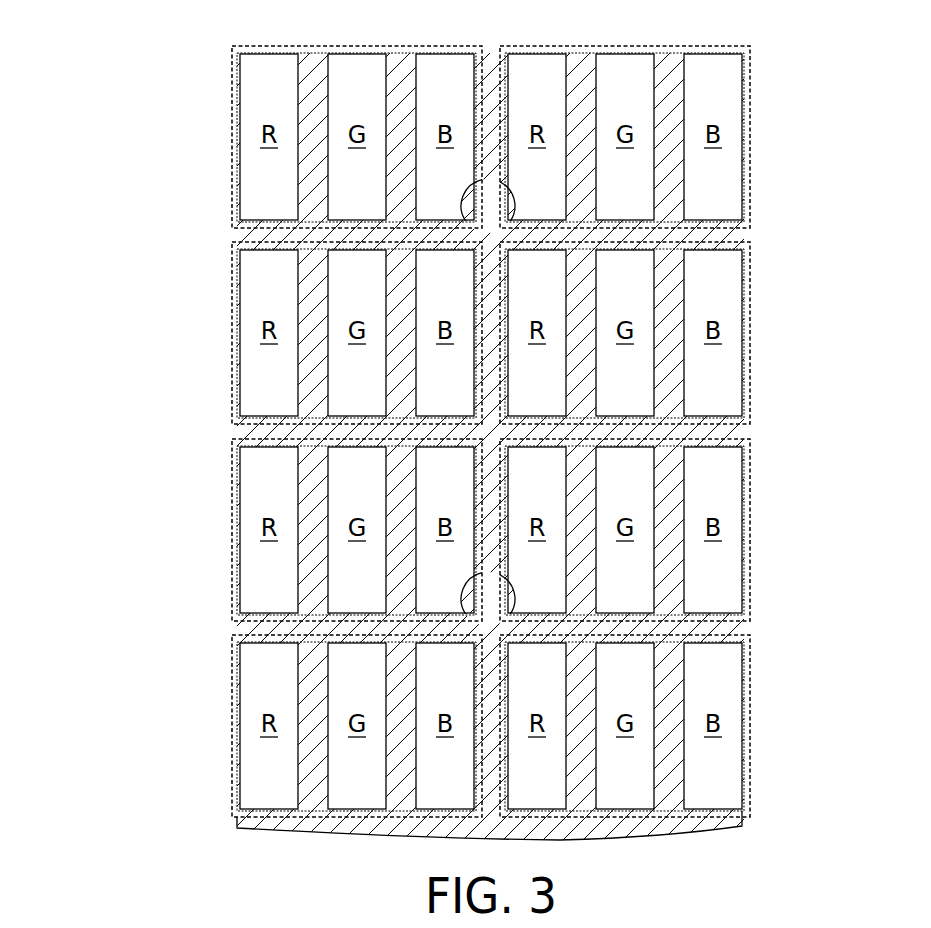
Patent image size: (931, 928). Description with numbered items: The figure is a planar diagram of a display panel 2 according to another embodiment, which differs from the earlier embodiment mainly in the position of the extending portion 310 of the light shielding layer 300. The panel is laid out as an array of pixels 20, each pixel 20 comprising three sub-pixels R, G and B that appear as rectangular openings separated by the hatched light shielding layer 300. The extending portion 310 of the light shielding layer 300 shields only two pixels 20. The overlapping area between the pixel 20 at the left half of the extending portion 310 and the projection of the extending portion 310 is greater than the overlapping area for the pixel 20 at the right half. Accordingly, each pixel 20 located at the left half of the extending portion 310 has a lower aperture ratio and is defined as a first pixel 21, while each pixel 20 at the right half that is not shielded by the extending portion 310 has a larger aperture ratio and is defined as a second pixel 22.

The display panel 2 is at (66, 30).
The pixel 20 is at (180, 312).
The first pixel 21 is at (232, 97).
The second pixel 22 is at (232, 334).
The light shielding layer 300 is at (238, 240).
The extending portion 310 is at (473, 203).